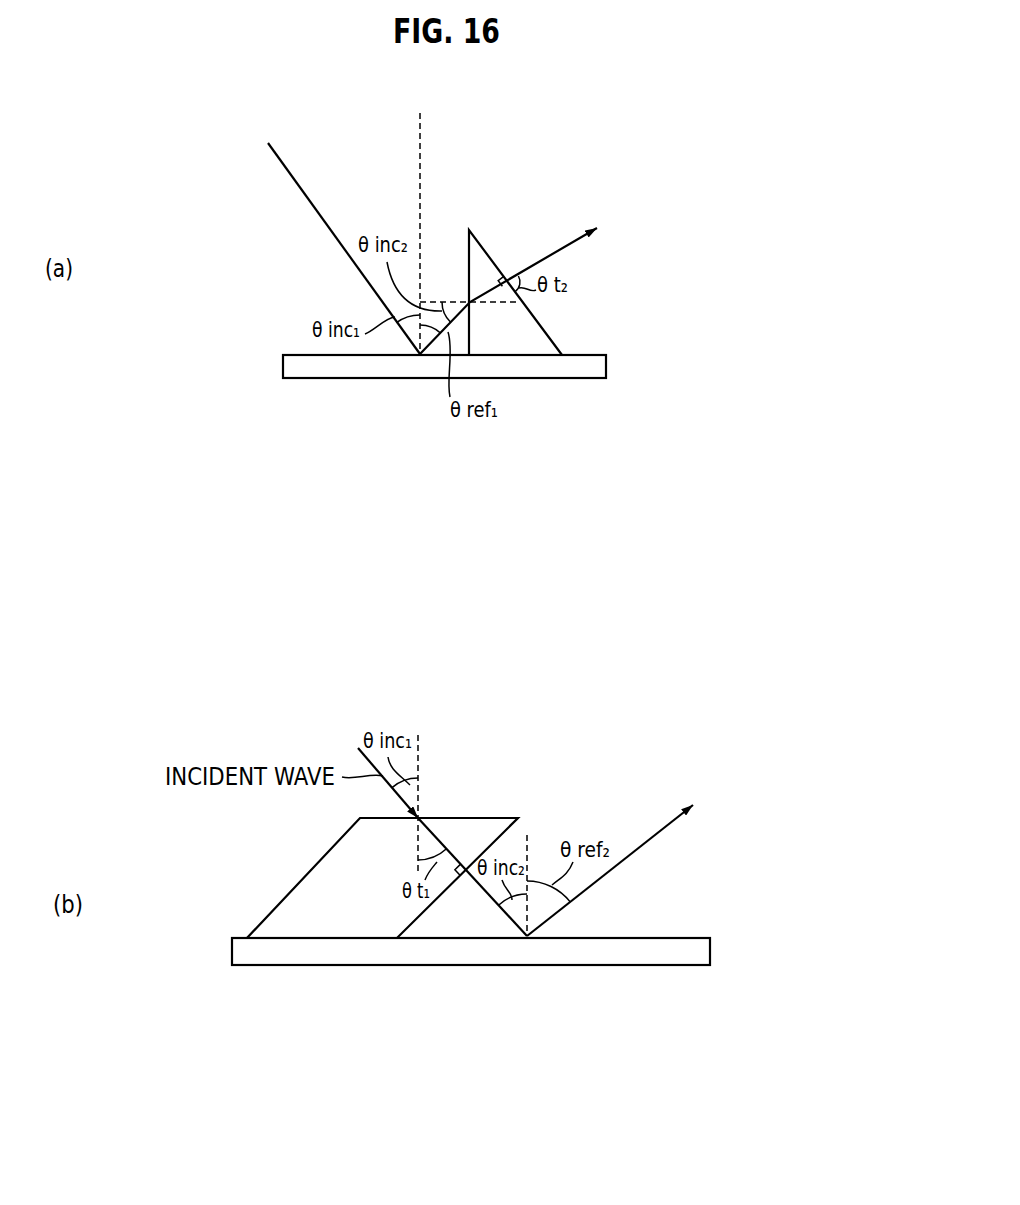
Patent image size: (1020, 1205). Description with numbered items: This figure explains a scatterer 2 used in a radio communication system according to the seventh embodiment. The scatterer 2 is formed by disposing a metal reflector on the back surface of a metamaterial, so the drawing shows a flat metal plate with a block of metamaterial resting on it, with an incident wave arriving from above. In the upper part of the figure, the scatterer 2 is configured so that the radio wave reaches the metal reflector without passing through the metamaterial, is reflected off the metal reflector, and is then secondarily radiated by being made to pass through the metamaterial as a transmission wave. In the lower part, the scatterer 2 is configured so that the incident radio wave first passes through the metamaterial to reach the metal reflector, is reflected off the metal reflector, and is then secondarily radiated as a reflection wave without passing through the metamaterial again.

The scatterer 2 is at (441, 648).
The element metamaterial is at (578, 322).